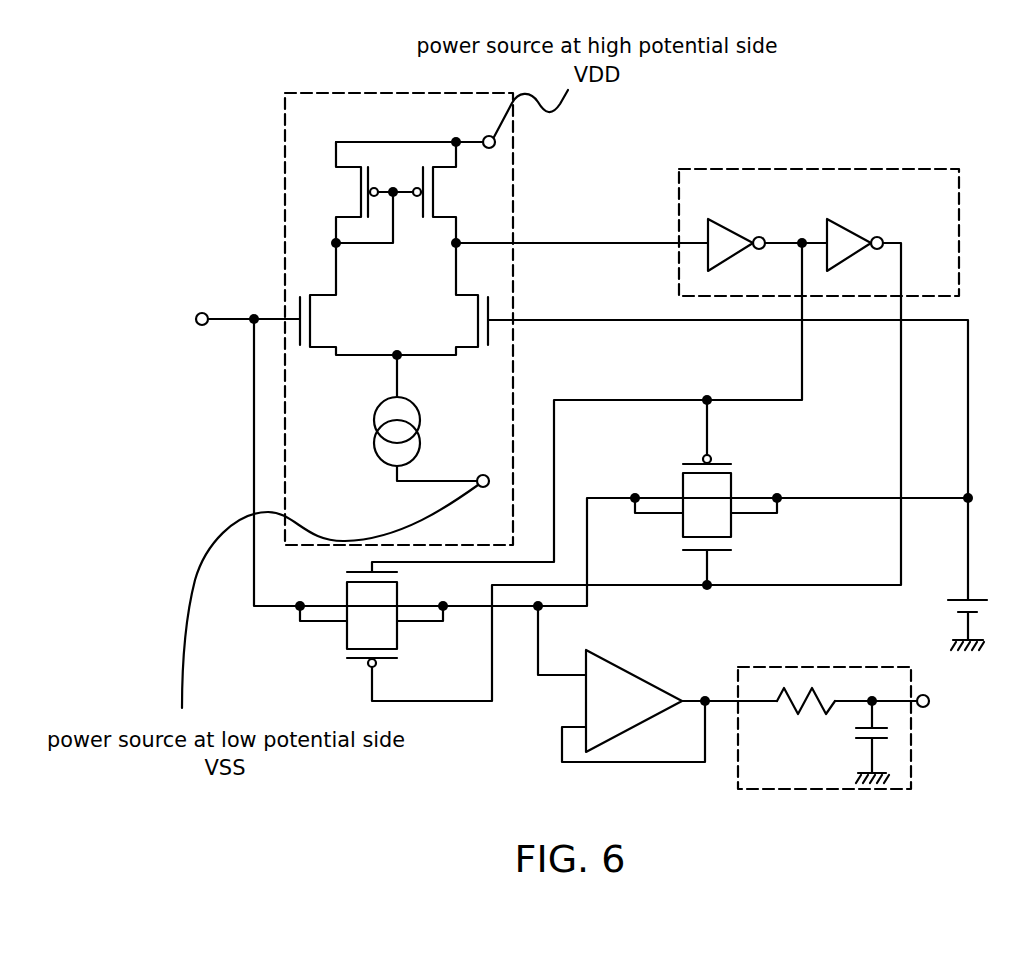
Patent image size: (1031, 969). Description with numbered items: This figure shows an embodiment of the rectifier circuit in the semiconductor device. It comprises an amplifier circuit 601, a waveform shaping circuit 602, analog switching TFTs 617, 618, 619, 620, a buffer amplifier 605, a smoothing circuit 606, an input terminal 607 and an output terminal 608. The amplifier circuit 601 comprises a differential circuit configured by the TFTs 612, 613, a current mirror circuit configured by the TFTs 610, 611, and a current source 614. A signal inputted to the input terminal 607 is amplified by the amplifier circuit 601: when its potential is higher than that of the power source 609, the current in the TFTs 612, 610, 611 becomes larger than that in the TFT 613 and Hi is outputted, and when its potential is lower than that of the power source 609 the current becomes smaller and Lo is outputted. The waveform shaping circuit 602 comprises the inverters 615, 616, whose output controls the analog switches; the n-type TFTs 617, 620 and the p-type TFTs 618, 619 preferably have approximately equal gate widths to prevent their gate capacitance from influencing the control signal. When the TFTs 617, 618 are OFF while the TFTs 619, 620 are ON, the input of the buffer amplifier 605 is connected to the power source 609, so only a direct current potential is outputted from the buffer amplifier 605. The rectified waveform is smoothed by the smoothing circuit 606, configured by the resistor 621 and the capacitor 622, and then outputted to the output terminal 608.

The amplifier circuit 601 is at (517, 200).
The waveform shaping circuit 602 is at (822, 170).
The buffer amplifier 605 is at (608, 766).
The smoothing circuit 606 is at (815, 656).
The input terminal 607 is at (205, 295).
The output terminal 608 is at (928, 708).
The power source 609 is at (985, 595).
The TFT 610 is at (347, 205).
The TFT 611 is at (443, 205).
The TFT 612 is at (325, 299).
The TFT 613 is at (470, 334).
The current source 614 is at (515, 380).
The inverter 615 is at (750, 227).
The inverter 616 is at (868, 227).
The analog switching TFT 617 is at (347, 585).
The analog switching TFT 618 is at (342, 656).
The analog switching TFT 619 is at (680, 476).
The analog switching TFT 620 is at (680, 546).
The resistor 621 is at (801, 729).
The capacitor 622 is at (866, 744).